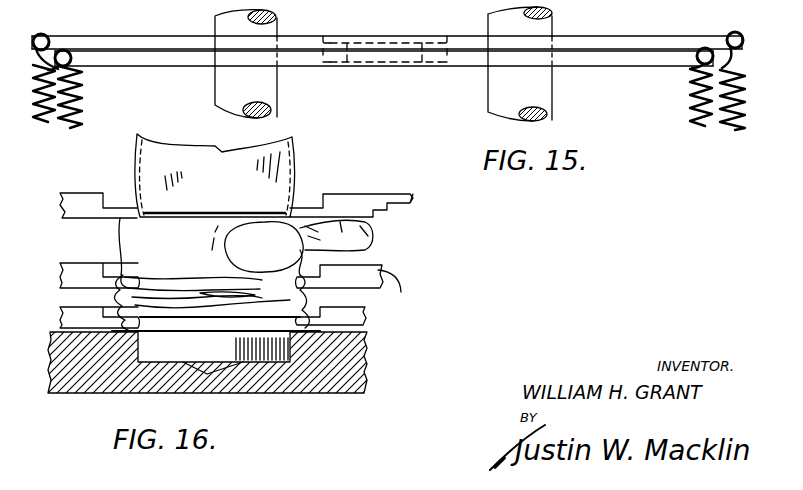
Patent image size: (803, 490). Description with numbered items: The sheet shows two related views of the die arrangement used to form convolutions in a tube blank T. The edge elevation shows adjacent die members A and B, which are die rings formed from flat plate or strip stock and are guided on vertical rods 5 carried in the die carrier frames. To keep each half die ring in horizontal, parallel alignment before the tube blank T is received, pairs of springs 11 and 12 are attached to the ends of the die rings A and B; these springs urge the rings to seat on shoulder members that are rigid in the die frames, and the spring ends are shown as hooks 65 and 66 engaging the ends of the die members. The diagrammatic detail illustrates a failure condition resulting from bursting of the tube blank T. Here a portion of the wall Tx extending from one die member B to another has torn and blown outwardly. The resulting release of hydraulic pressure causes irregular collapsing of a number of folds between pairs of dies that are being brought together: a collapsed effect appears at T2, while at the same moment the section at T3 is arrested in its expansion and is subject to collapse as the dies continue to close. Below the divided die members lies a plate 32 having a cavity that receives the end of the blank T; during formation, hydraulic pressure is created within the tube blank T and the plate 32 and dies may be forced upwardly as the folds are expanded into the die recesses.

In FIG. 15, the hook 65 is at (60, 40).
In FIG. 15, the hook 66 is at (78, 60).
In FIG. 15, the springs 11 is at (78, 128).
In FIG. 15, the vertical rods 5 is at (277, 28).
In FIG. 15, the die member A is at (583, 74).
In FIG. 15, the springs 12 is at (722, 126).
In FIG. 16, the tube section T3 is at (222, 152).
In FIG. 16, the die member B is at (369, 200).
In FIG. 16, the wall portion Tx is at (376, 237).
In FIG. 16, the tube blank T is at (135, 356).
In FIG. 16, the collapsed section T2 is at (310, 330).
In FIG. 16, the plate 32 is at (366, 367).